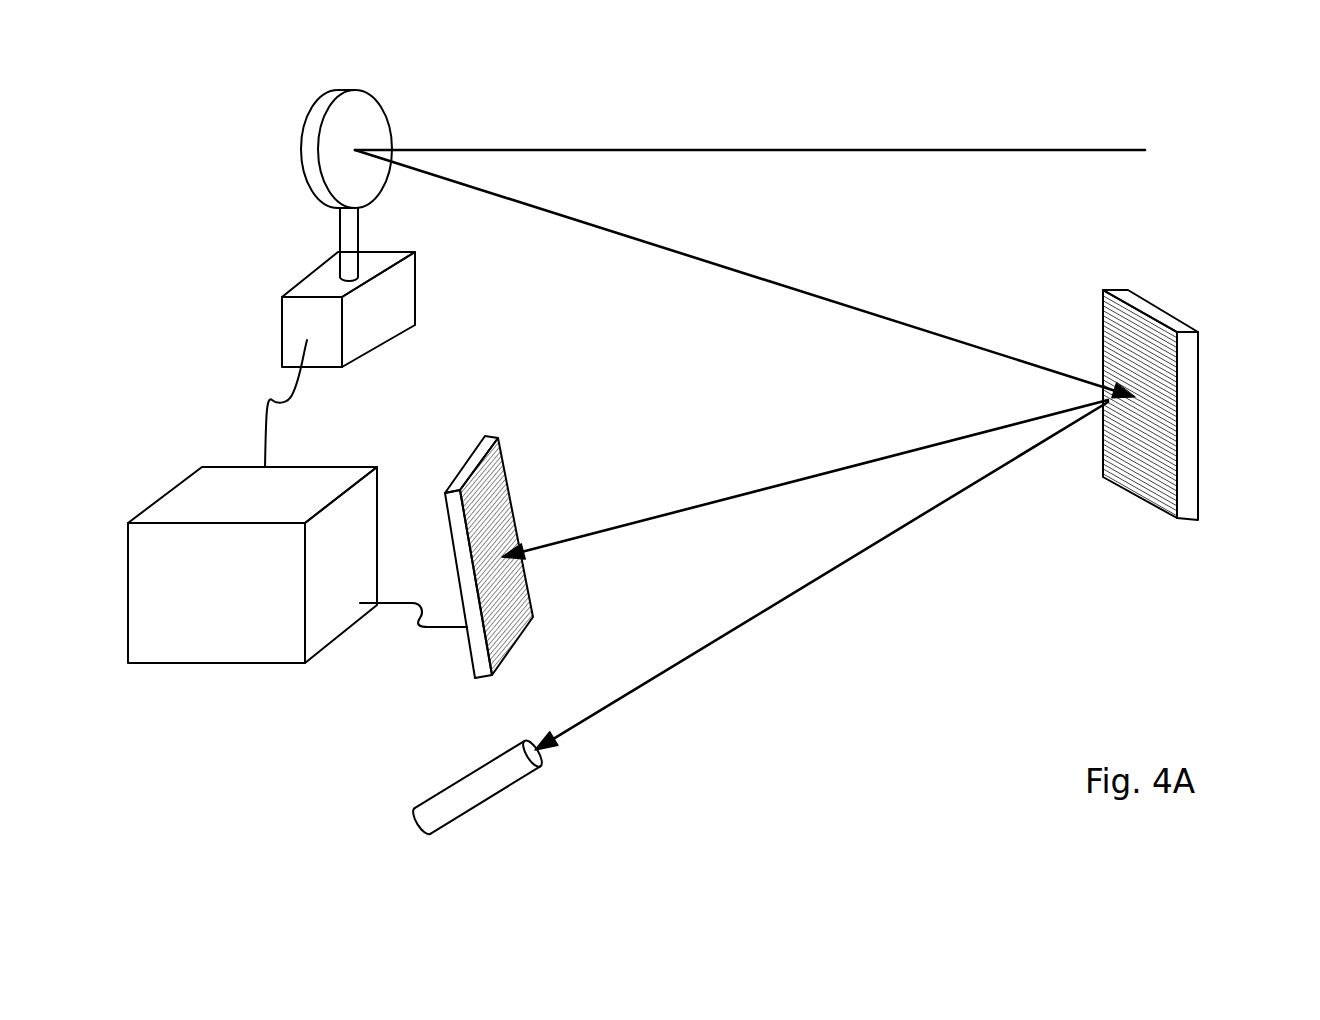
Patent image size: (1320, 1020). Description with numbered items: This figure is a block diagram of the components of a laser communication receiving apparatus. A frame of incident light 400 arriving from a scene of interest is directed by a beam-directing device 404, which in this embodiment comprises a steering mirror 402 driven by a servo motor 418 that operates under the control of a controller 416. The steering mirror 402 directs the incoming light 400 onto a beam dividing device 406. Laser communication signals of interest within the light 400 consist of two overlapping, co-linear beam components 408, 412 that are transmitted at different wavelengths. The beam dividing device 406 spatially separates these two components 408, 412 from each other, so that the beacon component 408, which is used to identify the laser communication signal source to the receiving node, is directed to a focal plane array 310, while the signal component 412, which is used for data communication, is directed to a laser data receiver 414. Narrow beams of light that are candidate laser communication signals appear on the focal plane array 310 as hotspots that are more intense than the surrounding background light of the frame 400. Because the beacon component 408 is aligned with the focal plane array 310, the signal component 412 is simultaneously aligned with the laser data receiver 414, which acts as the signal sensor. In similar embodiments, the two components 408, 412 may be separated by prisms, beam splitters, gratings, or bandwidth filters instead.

The incident light 400 is at (867, 150).
The steering mirror 402 is at (372, 99).
The beam-directing device 404 is at (303, 217).
The beam dividing device 406 is at (1200, 426).
The beacon component 408 is at (766, 488).
The signal component 412 is at (742, 630).
The laser data receiver 414 is at (478, 766).
The controller 416 is at (228, 605).
The servo motor 418 is at (283, 333).
The focal plane array 310 is at (472, 668).